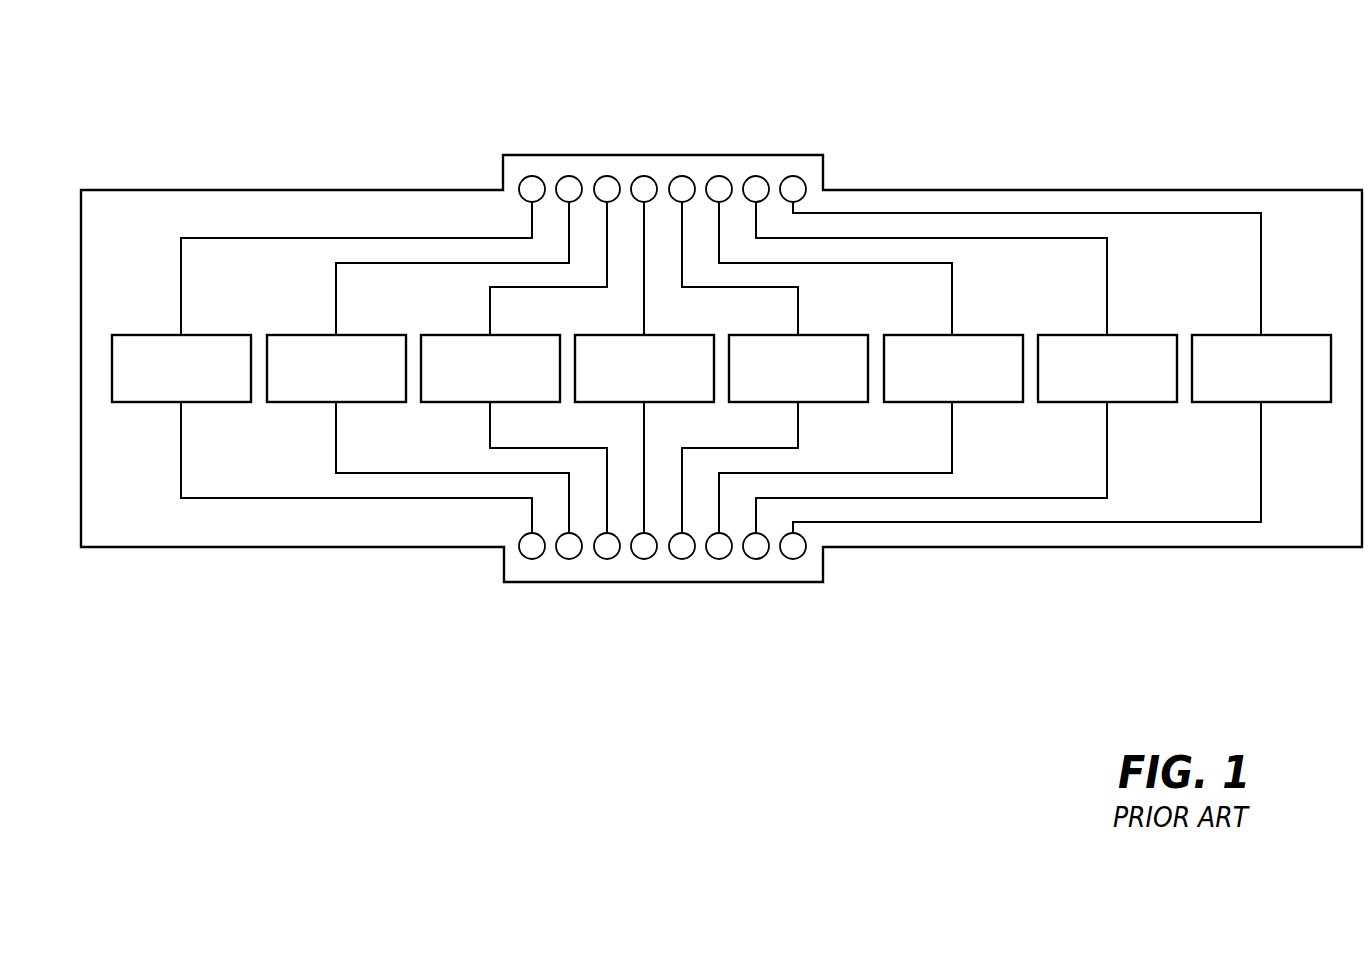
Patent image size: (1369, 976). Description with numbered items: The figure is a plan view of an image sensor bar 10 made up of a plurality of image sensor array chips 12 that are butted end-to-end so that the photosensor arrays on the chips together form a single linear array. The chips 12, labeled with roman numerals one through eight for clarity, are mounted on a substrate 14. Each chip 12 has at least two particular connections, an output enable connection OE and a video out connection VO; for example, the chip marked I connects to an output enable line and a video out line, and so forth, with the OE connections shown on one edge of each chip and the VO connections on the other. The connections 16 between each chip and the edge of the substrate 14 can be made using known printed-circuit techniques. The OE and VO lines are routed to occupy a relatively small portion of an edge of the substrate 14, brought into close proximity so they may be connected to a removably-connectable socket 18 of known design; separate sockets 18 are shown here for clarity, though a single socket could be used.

The image sensor bar 10 is at (313, 63).
The image sensor array chip 12 is at (150, 334).
The substrate 14 is at (152, 522).
The connections 16 is at (418, 472).
The socket 18 is at (830, 128).